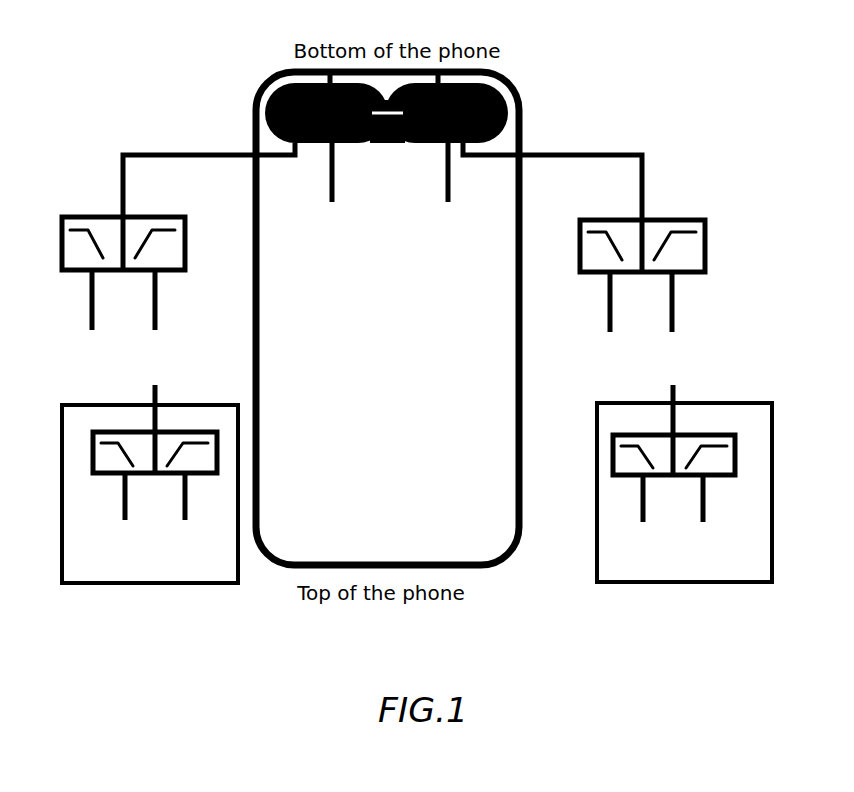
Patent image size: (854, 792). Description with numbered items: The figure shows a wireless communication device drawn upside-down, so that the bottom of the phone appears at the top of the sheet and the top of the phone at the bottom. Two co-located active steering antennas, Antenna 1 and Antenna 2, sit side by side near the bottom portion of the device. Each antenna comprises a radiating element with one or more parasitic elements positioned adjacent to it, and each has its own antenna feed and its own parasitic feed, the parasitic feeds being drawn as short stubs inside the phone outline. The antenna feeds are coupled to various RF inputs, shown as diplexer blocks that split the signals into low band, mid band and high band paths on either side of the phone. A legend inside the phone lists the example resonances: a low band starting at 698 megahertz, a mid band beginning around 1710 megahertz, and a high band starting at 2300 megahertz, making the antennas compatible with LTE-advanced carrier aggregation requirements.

The antenna 1 is at (317, 283).
The antenna 2 is at (457, 285).
The low band resonance frequency 698 is at (375, 453).
The mid band (MB) frequency range 1710-2160 MHz 1710 is at (388, 476).
The high band resonance frequency 2300 is at (387, 501).